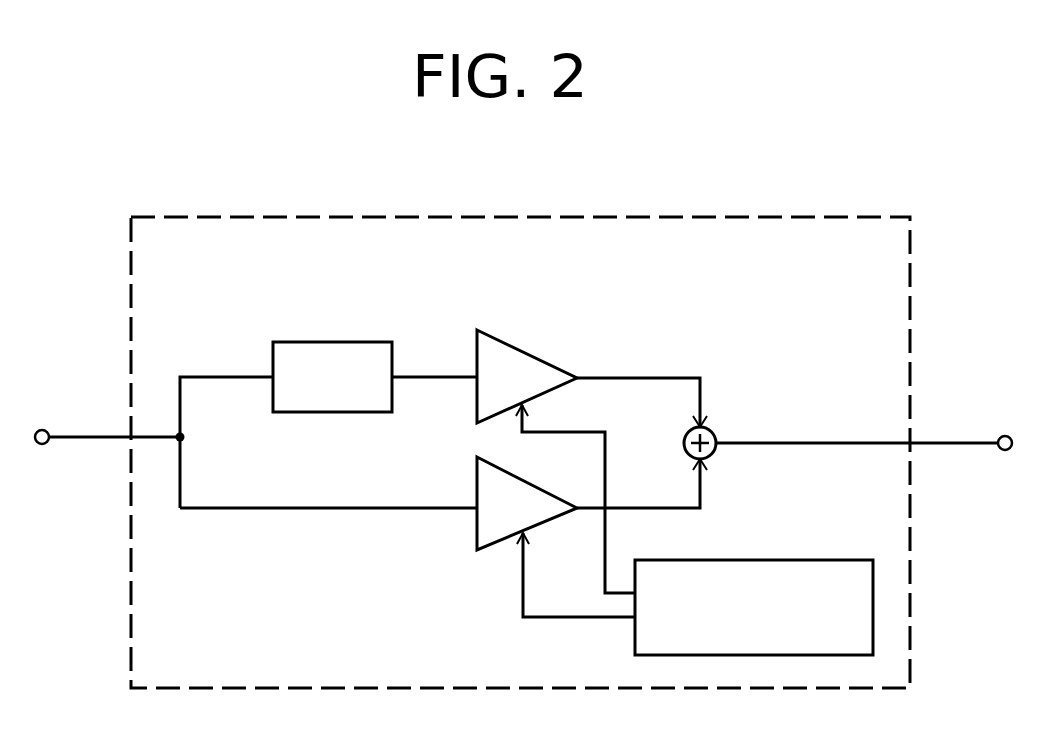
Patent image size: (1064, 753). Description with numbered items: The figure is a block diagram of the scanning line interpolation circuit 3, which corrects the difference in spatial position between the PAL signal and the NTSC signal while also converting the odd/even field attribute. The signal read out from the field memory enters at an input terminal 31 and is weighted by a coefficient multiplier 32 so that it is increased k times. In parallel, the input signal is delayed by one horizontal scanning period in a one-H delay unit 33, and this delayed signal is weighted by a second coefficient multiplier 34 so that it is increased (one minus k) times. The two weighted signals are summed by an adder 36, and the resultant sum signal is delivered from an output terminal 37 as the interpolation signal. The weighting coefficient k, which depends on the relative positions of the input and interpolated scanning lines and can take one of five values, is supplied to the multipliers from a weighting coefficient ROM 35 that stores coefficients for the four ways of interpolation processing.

The scanning line interpolation circuit 3 is at (812, 217).
The input terminal 31 is at (42, 430).
The coefficient multiplier 32 is at (481, 552).
The 1H delay unit 33 is at (331, 342).
The coefficient multiplier 34 is at (531, 353).
The weighting coefficient ROM 35 is at (800, 560).
The adder 36 is at (716, 432).
The output terminal 37 is at (1003, 436).